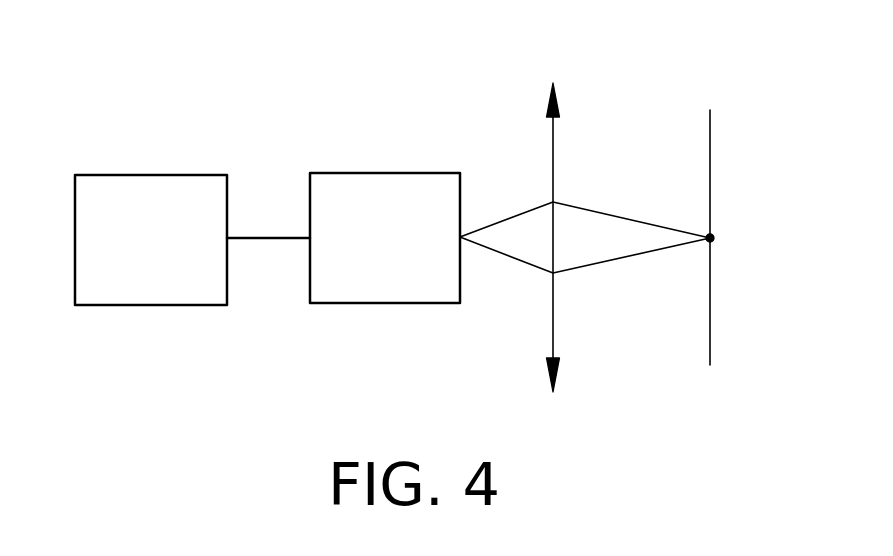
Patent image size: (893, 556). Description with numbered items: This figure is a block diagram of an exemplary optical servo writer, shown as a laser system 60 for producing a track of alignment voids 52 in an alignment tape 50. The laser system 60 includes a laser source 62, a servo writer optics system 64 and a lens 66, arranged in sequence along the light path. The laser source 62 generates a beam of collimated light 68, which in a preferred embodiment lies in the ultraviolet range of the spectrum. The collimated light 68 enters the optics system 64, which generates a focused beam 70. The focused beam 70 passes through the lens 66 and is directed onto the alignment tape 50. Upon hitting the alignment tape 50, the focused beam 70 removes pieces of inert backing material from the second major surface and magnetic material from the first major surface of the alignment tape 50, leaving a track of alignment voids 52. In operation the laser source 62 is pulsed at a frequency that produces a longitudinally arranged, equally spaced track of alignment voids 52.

The alignment tape 50 is at (718, 88).
The alignment voids 52 is at (713, 236).
The laser system 60 is at (133, 94).
The laser source 62 is at (138, 305).
The servo writer optics system 64 is at (370, 303).
The lens 66 is at (584, 93).
The collimated light 68 is at (268, 239).
The focused beam 70 is at (516, 212).